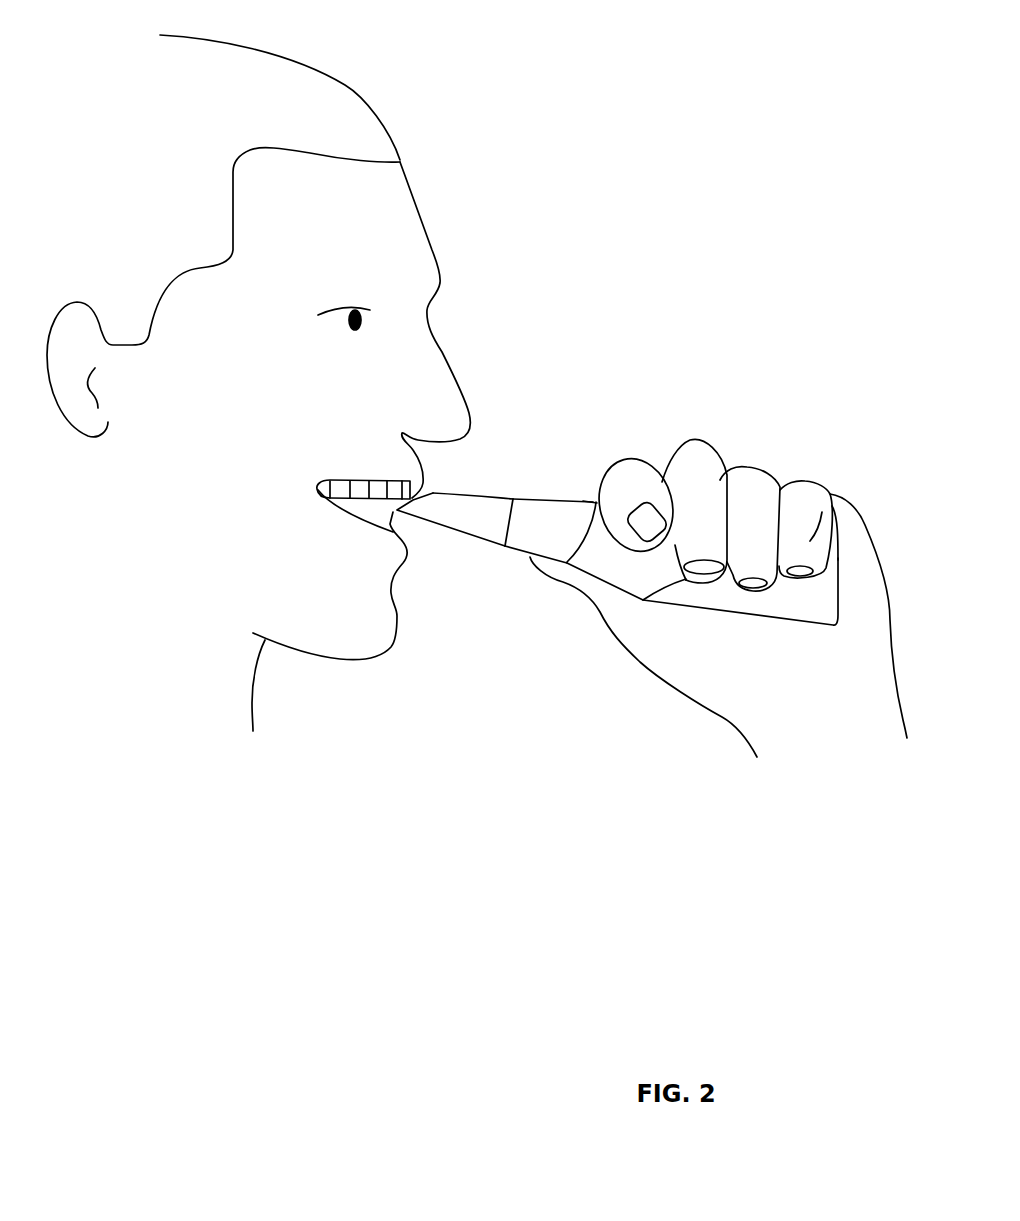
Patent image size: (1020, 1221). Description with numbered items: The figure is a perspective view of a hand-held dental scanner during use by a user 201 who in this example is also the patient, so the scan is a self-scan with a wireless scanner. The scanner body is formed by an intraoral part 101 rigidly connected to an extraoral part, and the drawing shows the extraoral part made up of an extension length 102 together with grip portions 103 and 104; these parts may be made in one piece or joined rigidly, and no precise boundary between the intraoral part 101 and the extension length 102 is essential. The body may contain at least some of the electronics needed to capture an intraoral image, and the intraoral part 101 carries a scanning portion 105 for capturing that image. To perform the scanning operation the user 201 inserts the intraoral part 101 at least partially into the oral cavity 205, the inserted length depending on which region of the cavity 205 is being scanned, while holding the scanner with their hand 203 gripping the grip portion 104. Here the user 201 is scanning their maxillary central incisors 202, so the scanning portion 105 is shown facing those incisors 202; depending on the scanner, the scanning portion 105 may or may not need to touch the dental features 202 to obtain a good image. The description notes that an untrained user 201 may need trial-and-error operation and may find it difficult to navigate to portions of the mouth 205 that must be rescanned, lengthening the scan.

The intraoral part 101 is at (619, 667).
The extension length 102 is at (517, 546).
The grip portion 103 is at (596, 504).
The grip portion 104 is at (783, 607).
The scanning portion 105 is at (402, 510).
The user 201 is at (433, 207).
The maxillary central incisors 202 is at (410, 492).
The hand 203 is at (707, 660).
The oral cavity 205 is at (372, 509).